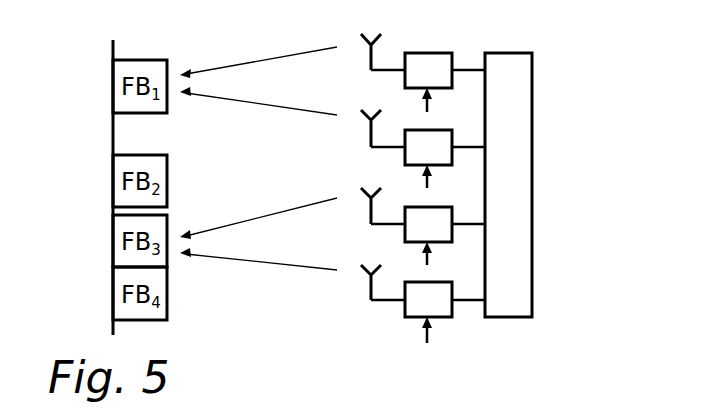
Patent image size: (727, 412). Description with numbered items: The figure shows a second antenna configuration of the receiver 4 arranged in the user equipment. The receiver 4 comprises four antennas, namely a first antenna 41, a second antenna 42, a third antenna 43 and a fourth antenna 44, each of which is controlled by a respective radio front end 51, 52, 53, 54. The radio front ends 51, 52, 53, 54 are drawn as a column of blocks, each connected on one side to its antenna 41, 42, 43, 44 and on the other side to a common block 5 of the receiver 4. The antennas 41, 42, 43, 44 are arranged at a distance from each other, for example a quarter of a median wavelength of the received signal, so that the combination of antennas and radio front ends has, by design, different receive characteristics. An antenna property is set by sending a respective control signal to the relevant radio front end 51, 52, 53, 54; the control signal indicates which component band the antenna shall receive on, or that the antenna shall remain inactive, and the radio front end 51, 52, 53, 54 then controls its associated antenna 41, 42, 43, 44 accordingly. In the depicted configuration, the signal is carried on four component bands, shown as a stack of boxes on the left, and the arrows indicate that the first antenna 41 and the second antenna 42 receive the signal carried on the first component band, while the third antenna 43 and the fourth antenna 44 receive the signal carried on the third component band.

The receiver 4 is at (560, 73).
The control unit 5 is at (516, 202).
The first antenna 41 is at (366, 46).
The second antenna 42 is at (366, 122).
The third antenna 43 is at (366, 199).
The fourth antenna 44 is at (366, 276).
The radio front end 51 is at (441, 81).
The radio front end 52 is at (441, 158).
The radio front end 53 is at (441, 235).
The radio front end 54 is at (441, 310).